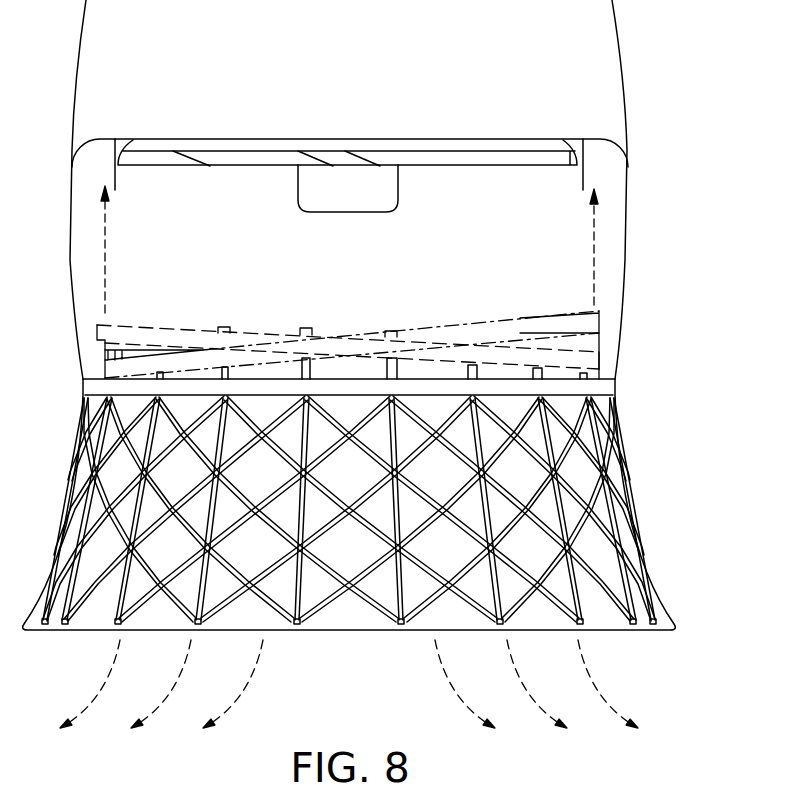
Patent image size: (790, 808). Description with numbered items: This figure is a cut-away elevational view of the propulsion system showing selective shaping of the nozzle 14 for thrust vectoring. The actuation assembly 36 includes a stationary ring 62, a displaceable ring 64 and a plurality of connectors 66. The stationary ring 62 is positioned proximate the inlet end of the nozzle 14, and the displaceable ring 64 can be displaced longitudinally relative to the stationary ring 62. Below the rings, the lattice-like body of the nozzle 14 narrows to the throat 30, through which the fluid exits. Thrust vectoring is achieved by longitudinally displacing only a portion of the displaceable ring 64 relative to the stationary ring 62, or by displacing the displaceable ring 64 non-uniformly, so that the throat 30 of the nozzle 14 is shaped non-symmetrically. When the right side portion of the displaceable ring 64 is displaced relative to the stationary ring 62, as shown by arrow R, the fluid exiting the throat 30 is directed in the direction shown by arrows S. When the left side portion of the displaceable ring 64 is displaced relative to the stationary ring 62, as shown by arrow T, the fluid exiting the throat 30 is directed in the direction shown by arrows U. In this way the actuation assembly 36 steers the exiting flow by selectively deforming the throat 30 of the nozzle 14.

The actuation assembly 36 is at (405, 189).
The displaceable ring 64 is at (515, 322).
The stationary ring 62 is at (596, 388).
The nozzle 14 is at (624, 479).
The connectors 66 is at (308, 582).
The throat 30 is at (388, 633).
The arrow T is at (102, 219).
The arrow R is at (597, 219).
The arrows U is at (254, 678).
The arrows S is at (444, 678).